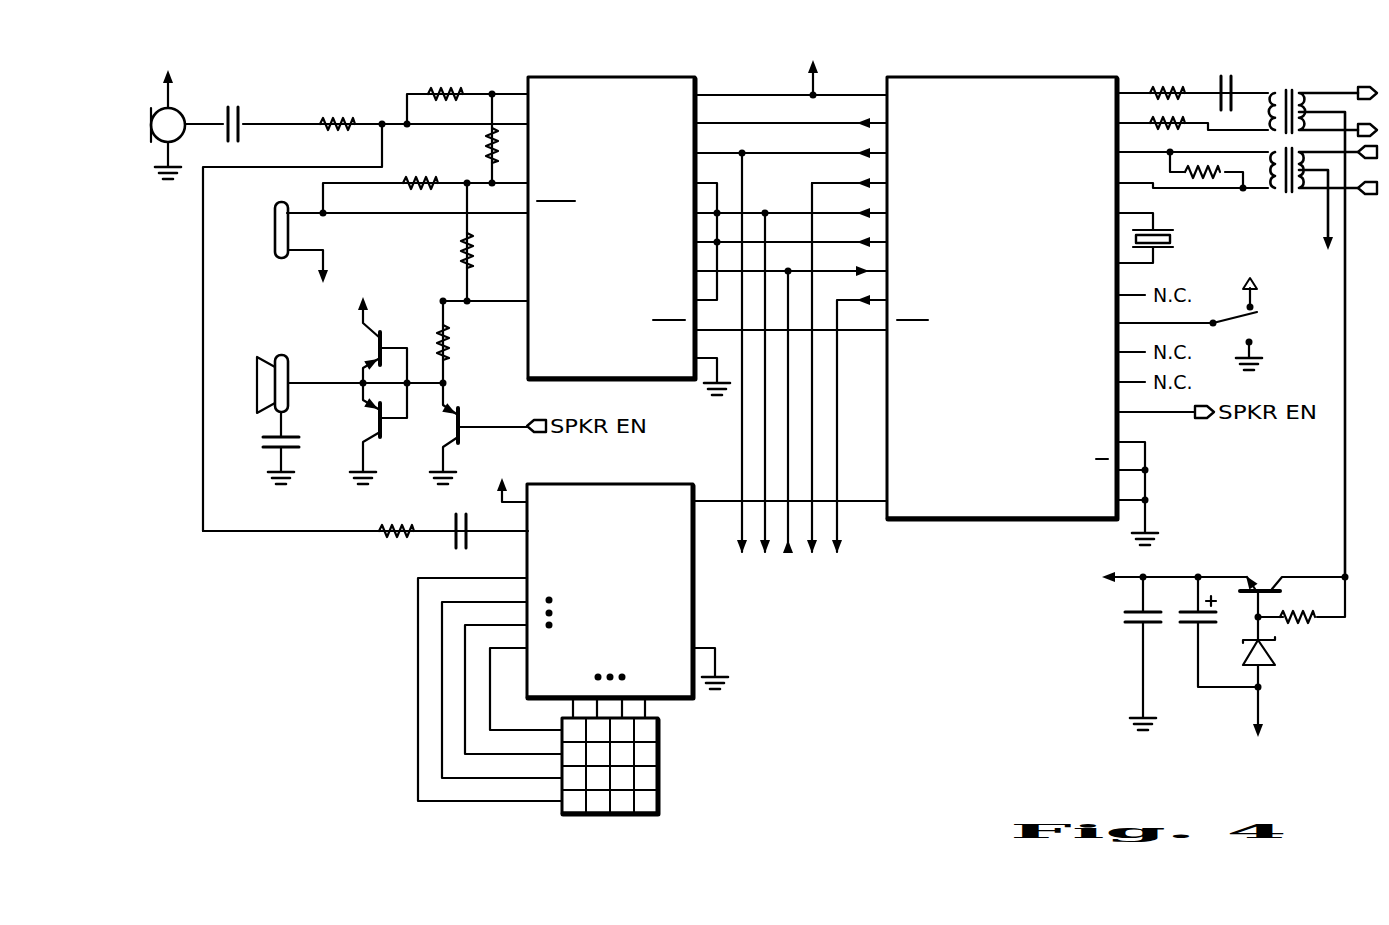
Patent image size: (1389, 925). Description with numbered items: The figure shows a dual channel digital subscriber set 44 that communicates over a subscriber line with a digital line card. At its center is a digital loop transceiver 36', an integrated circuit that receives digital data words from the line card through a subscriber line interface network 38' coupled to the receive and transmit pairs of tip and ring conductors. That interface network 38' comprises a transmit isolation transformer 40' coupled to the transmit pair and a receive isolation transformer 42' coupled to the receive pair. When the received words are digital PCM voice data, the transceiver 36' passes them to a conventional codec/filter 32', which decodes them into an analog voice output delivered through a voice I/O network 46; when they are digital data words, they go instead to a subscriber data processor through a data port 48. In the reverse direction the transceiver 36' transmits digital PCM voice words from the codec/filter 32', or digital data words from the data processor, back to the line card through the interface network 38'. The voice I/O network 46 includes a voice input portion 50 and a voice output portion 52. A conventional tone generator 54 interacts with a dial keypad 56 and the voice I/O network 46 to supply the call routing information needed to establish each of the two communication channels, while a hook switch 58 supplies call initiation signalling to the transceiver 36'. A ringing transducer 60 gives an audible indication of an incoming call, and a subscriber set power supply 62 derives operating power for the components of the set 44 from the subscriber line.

The codec/filter 32' is at (579, 231).
The digital loop transceiver 36' is at (1002, 322).
The subscriber line interface network 38' is at (1283, 333).
The transmit isolation transformer 40' is at (1340, 127).
The receive isolation transformer 42' is at (1283, 199).
The digital subscriber set 44 is at (799, 723).
The voice I/O network 46 is at (428, 78).
The data port 48 is at (882, 553).
The voice input portion 50 is at (253, 96).
The voice output portion 52 is at (262, 226).
The tone generator 54 is at (657, 483).
The dial keypad 56 is at (658, 744).
The hook switch 58 is at (1296, 351).
The ringing transducer 60 is at (280, 332).
The subscriber set power supply 62 is at (1233, 544).